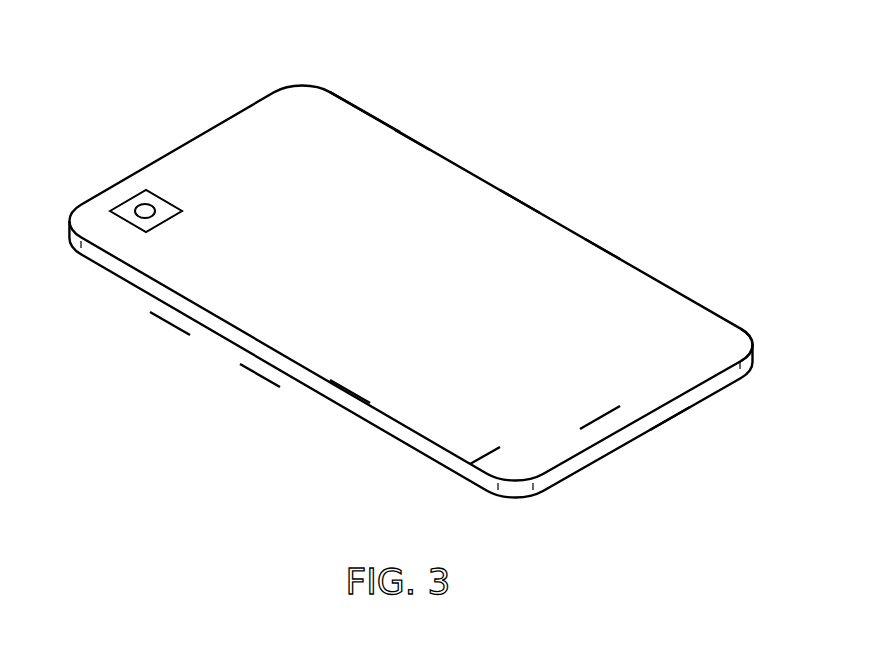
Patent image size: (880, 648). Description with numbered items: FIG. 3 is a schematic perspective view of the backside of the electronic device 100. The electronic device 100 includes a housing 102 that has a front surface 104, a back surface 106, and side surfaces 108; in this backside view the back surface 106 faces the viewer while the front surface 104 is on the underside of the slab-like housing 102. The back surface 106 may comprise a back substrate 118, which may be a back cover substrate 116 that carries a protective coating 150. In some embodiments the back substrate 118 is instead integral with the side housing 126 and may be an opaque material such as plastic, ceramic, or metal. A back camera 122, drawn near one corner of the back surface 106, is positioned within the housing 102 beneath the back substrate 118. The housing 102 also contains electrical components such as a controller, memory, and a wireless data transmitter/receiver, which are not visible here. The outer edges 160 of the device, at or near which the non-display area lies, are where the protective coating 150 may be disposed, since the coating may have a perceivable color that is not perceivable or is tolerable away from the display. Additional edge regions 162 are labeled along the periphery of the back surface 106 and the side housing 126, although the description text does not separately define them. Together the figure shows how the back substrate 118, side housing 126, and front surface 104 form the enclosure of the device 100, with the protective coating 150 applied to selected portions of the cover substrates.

The electronic device 100 is at (136, 98).
The housing 102 is at (335, 117).
The front surface 104 is at (360, 377).
The back surface 106 is at (718, 337).
The side surfaces 108 is at (170, 307).
The back cover substrate 116 is at (593, 250).
The back substrate 118 is at (400, 150).
The back camera 122 is at (132, 197).
The side housing 126 is at (668, 420).
The protective coating 150 is at (490, 452).
The outer edges 160 is at (262, 360).
The edge 162 is at (510, 197).